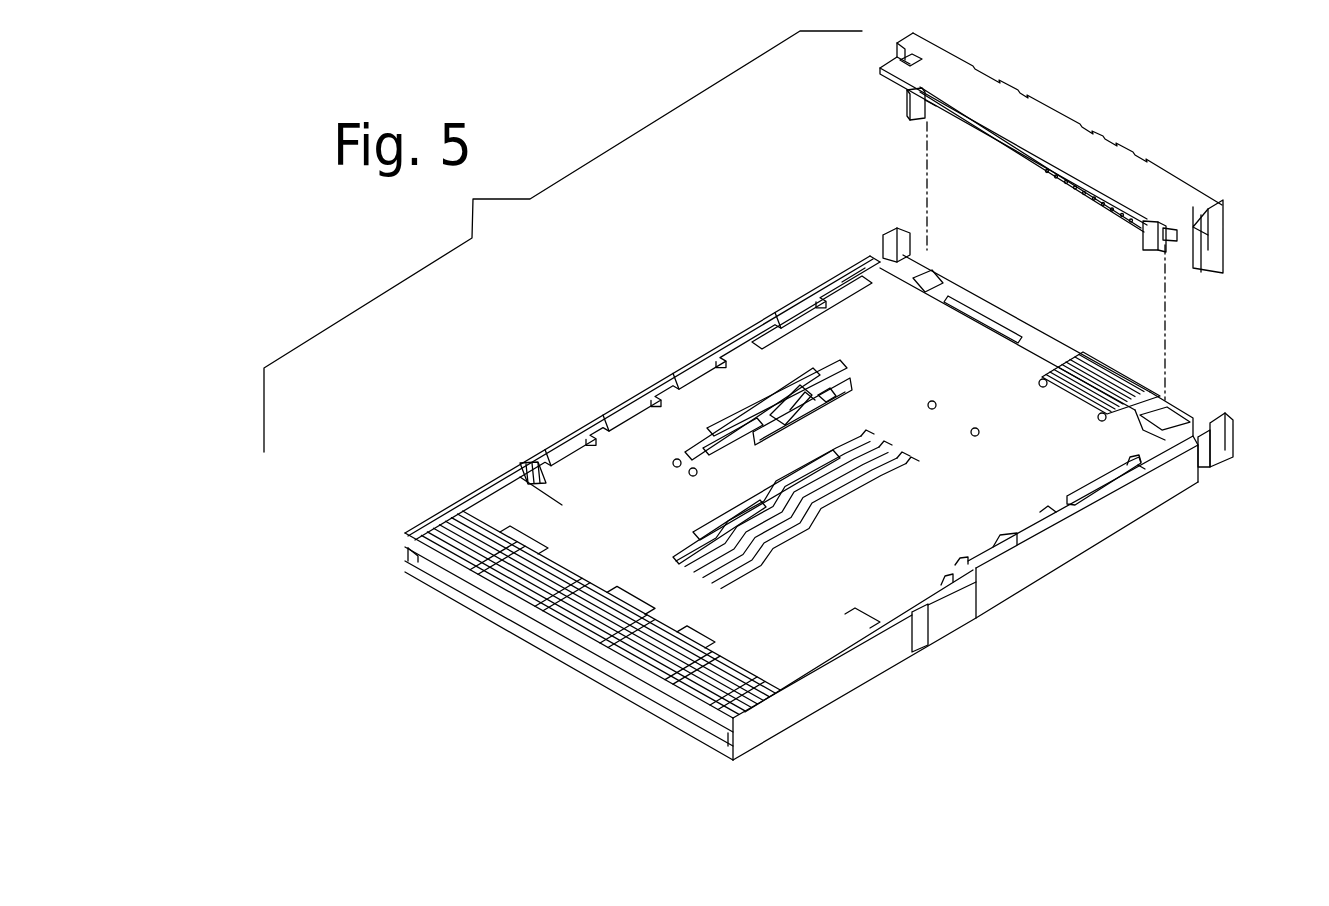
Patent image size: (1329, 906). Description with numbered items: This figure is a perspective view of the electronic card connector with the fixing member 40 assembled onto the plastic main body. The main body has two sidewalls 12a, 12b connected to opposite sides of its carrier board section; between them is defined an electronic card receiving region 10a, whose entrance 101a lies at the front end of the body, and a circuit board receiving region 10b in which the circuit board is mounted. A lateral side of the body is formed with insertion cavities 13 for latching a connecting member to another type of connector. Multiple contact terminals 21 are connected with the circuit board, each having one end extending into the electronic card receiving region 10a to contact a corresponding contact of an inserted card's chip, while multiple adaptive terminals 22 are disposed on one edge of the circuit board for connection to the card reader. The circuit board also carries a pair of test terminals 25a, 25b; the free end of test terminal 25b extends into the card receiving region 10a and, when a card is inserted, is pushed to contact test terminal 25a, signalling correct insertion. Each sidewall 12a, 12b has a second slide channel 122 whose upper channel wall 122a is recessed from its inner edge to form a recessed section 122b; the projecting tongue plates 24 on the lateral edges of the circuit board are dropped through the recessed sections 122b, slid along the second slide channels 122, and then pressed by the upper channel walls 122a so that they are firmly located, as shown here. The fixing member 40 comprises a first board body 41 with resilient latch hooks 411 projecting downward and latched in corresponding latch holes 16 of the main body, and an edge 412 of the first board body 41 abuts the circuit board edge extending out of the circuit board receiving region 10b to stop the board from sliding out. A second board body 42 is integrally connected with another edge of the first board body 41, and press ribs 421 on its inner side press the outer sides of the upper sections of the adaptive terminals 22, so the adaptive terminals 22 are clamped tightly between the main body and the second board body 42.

The electronic card receiving region 10a is at (500, 613).
The circuit board receiving region 10b is at (500, 470).
The entrance 101a is at (405, 565).
The sidewall 12a is at (873, 663).
The sidewall 12b is at (695, 352).
The insertion cavity 13 is at (880, 260).
The latch hole 16 is at (937, 277).
The contact terminal 21 is at (767, 520).
The adaptive terminal 22 is at (1080, 353).
The projecting tongue plate 24 is at (820, 283).
The test terminal 25a is at (803, 380).
The test terminal 25b is at (843, 385).
The fixing member 40 is at (1122, 148).
The first board body 41 is at (1043, 130).
The second board body 42 is at (1227, 237).
The second slide channel 122 is at (863, 288).
The upper channel wall 122a is at (842, 282).
The recessed section 122b is at (795, 312).
The resilient latch hook 411 is at (907, 97).
The edge 412 is at (1178, 238).
The press rib 421 is at (1093, 202).